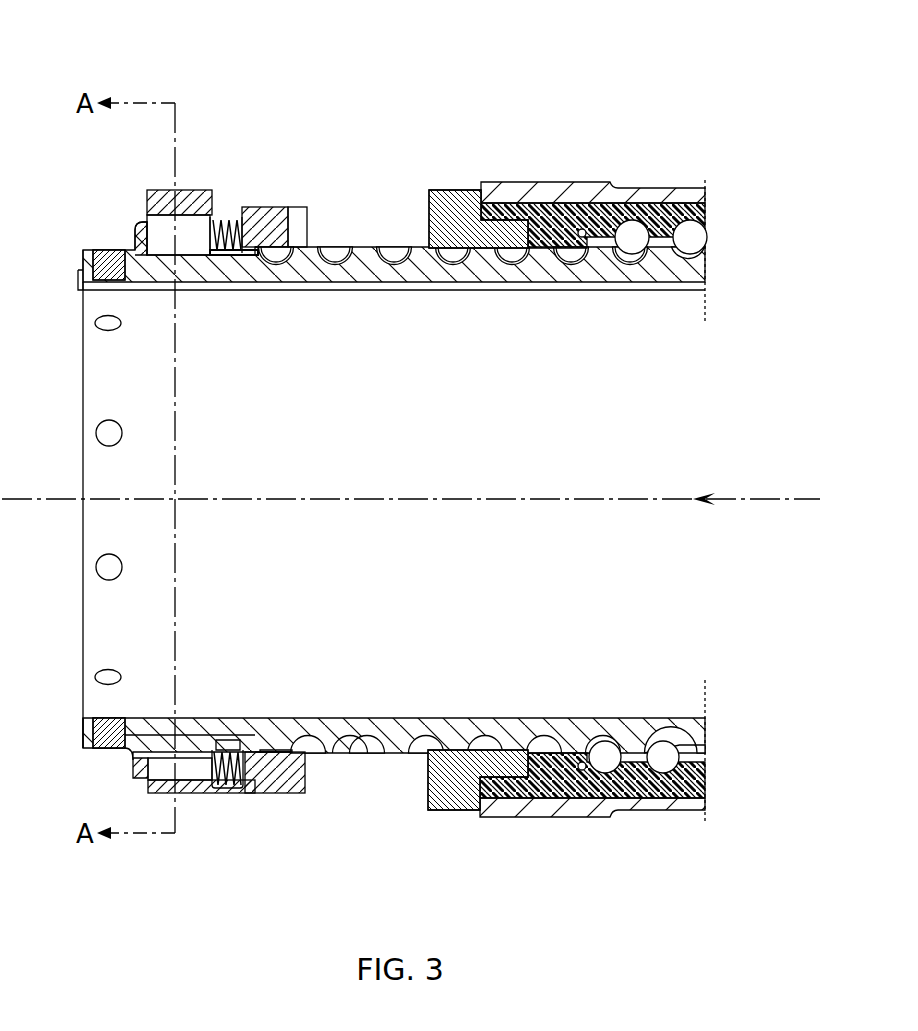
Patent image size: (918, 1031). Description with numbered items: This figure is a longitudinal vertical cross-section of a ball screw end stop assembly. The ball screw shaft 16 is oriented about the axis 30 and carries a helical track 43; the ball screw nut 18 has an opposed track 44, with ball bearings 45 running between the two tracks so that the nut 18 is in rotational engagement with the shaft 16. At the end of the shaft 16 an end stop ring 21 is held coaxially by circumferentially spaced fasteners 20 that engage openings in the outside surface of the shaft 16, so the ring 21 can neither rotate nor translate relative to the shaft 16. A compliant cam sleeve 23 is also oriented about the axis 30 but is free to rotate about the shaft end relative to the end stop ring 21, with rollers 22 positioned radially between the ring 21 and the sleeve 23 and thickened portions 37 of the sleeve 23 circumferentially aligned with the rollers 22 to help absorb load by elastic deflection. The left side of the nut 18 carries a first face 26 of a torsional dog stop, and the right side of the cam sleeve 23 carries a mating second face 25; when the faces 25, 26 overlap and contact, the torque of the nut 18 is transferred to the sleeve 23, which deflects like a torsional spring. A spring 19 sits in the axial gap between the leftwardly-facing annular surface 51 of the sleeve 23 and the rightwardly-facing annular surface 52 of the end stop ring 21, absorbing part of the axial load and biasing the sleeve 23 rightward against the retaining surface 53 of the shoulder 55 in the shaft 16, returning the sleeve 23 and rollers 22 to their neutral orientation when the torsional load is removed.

The ball screw shaft 16 is at (500, 293).
The ball screw nut 18 is at (501, 164).
The spring 19 is at (231, 791).
The fasteners 20 is at (110, 278).
The end stop ring 21 is at (121, 236).
The rollers 22 is at (188, 226).
The compliant cam sleeve 23 is at (271, 806).
The second face of torsional dog stop 25 is at (293, 217).
The first face of torsional dog stop 26 is at (437, 204).
The axis 30 is at (756, 496).
The thickened portions 37 is at (156, 187).
The helical track 43 is at (372, 759).
The opposed track 44 is at (604, 756).
The ball bearings 45 is at (634, 253).
The leftwardly-facing annular vertical surface 51 is at (239, 208).
The rightwardly-facing vertical annular surface 52 is at (218, 214).
The leftwardly-facing vertical annular retaining surface 53 is at (251, 261).
The shoulder 55 is at (262, 262).